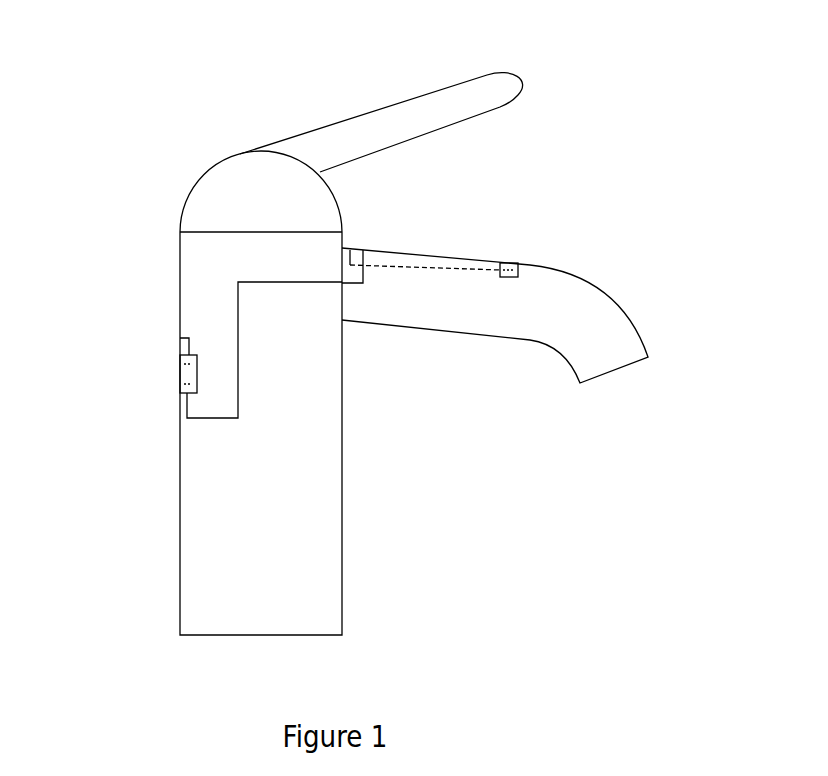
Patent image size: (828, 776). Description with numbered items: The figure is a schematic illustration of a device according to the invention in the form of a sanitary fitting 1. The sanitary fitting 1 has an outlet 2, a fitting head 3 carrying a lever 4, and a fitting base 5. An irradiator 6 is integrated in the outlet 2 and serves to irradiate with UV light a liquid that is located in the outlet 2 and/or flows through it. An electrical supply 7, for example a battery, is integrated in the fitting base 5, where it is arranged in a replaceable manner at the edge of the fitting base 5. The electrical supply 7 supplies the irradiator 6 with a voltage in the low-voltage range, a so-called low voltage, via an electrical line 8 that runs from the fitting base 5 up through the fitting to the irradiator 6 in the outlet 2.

The sanitary fitting 1 is at (365, 329).
The outlet 2 is at (610, 355).
The fitting head 3 is at (187, 193).
The lever 4 is at (363, 112).
The fitting base 5 is at (178, 532).
The irradiator 6 is at (463, 268).
The electrical supply 7 is at (183, 373).
The electrical line 8 is at (207, 420).